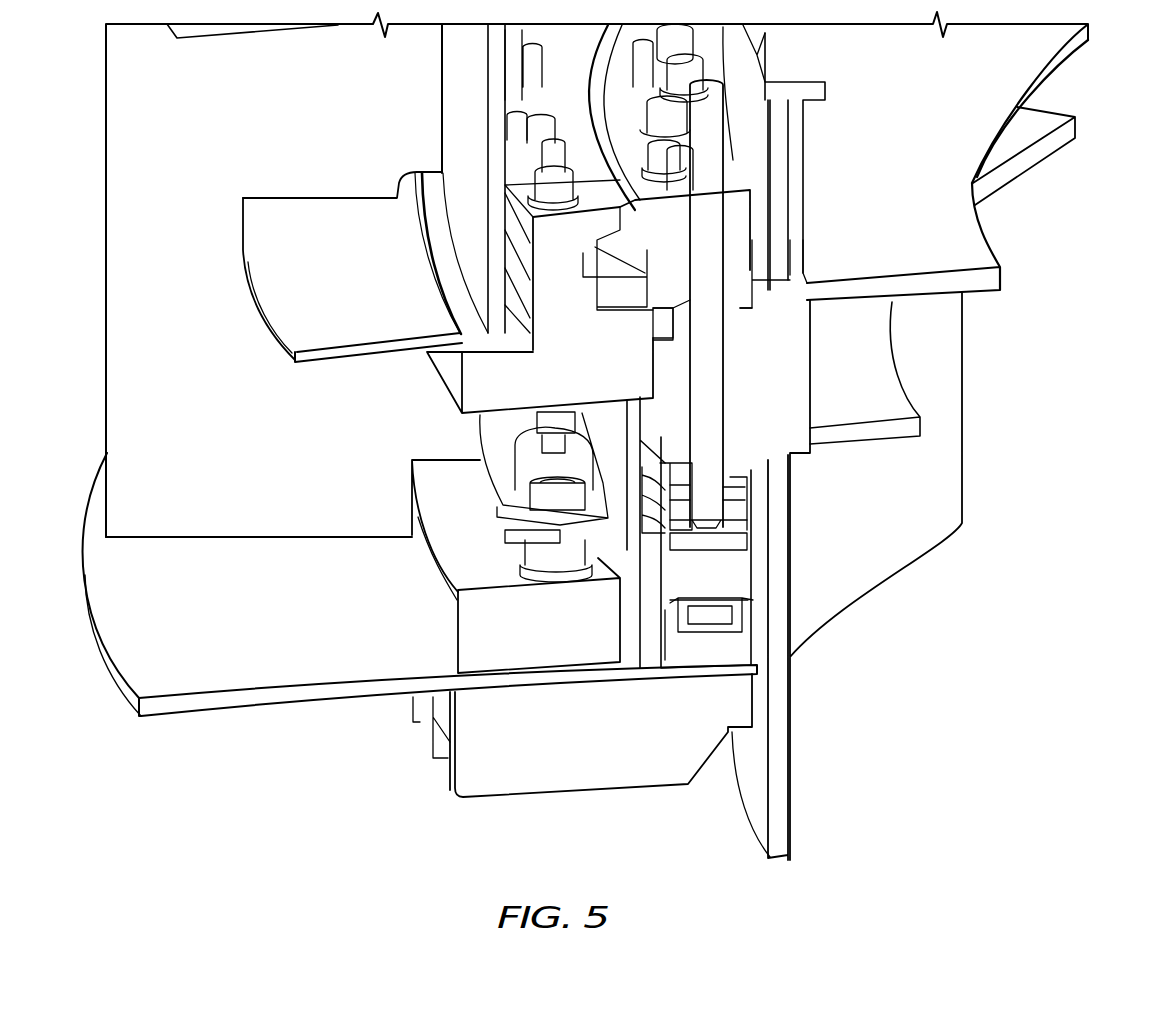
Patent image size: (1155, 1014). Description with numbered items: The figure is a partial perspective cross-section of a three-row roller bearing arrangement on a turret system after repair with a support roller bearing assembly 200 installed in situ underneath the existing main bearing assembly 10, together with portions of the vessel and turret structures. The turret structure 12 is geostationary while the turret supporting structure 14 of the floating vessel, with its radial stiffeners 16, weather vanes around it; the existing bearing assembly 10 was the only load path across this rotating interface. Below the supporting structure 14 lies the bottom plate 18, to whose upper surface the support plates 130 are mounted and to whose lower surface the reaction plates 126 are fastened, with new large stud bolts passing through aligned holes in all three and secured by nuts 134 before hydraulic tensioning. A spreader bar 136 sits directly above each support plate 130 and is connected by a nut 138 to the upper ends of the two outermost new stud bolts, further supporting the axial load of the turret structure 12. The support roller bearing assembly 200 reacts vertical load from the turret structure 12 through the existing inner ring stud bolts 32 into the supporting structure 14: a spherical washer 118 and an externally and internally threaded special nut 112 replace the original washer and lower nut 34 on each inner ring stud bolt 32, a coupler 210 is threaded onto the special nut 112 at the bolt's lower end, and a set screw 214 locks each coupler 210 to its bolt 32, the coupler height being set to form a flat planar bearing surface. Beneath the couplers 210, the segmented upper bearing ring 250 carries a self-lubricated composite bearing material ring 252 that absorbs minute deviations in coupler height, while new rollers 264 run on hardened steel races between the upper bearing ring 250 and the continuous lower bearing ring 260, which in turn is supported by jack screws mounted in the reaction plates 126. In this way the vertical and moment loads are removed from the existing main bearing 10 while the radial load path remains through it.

The three race roller bearing assembly 10 is at (575, 293).
The turret structure 12 is at (783, 328).
The turret supporting structure 14 is at (480, 383).
The radial stiffeners 16 is at (130, 226).
The bottom plate 18 is at (138, 650).
The inner ring stud bolt 32 is at (707, 423).
The lower nut 34 is at (733, 157).
The special nut 112 is at (730, 487).
The spherical washer 118 is at (737, 467).
The reaction plates 126 is at (487, 717).
The support plates 130 is at (528, 648).
The nuts 134 is at (540, 552).
The spreader bar 136 is at (488, 428).
The nut 138 is at (535, 500).
The support roller bearing assembly 200 is at (798, 608).
The coupler 210 is at (742, 498).
The set screw 214 is at (745, 530).
The upper bearing ring 250 is at (682, 570).
The bearing material ring 252 is at (718, 538).
The lower bearing ring 260 is at (697, 650).
The rollers 264 is at (712, 615).